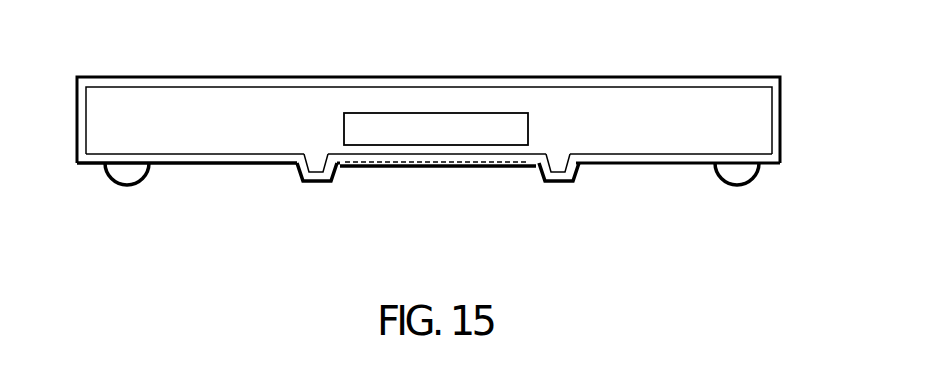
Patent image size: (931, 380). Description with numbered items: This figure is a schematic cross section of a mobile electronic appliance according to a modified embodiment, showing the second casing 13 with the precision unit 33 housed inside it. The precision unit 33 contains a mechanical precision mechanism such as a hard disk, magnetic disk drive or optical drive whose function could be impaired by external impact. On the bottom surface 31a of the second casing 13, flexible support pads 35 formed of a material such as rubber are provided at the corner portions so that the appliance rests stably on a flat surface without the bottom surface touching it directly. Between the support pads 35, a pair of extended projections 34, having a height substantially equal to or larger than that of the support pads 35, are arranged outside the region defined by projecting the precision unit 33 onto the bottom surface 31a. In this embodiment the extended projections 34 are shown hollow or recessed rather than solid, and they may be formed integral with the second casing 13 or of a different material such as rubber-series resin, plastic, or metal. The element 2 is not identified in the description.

The second casing 13 is at (506, 77).
The bottom surface 31a is at (234, 165).
The precision unit 33 is at (379, 118).
The extended projections 34 is at (308, 183).
The semiconductor chip 2 is at (442, 168).
The support pads 35 is at (130, 186).